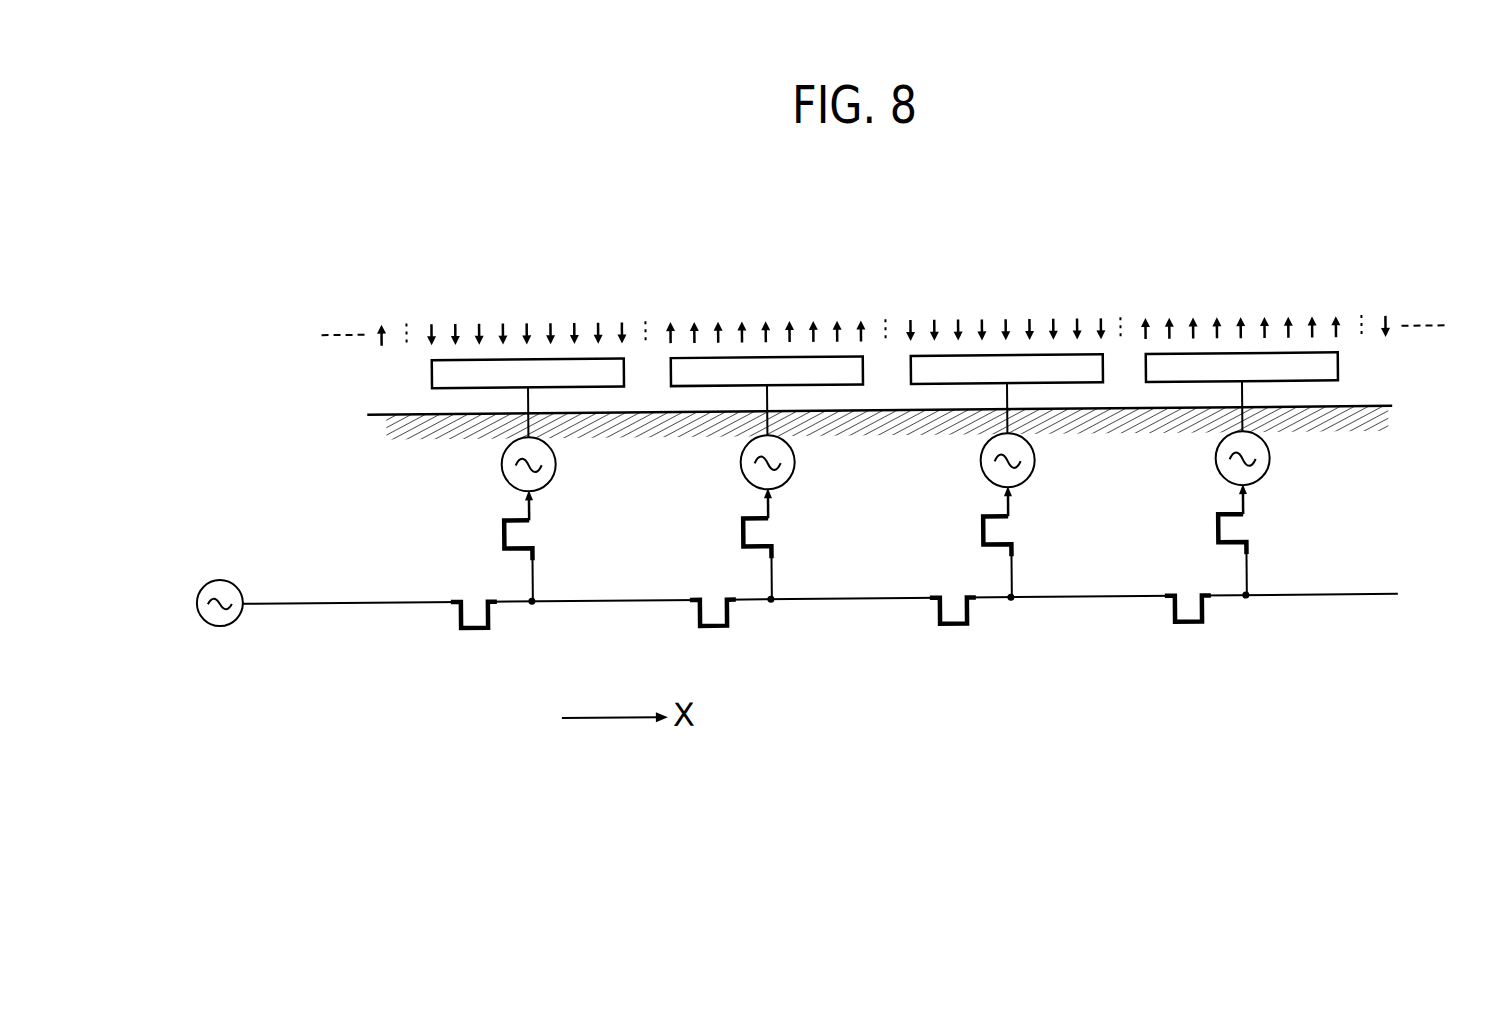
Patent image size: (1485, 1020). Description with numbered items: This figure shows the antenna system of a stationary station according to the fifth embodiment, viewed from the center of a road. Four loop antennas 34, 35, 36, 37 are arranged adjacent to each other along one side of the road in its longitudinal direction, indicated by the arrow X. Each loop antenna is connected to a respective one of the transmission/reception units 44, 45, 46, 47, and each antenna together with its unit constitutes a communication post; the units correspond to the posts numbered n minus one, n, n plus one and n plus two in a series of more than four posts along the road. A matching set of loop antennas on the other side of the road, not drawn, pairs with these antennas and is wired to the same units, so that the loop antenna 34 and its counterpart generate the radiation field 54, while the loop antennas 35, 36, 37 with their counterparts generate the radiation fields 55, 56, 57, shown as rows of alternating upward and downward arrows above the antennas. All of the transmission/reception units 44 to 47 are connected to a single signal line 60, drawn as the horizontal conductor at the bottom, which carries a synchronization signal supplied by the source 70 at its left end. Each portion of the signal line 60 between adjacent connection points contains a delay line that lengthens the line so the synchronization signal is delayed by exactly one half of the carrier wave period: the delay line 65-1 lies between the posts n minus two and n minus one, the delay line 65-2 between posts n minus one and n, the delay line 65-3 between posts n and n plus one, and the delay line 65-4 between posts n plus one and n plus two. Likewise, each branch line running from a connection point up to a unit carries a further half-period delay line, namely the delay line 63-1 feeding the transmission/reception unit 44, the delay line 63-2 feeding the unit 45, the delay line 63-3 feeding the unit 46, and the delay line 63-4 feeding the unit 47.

The loop antenna 34 is at (607, 357).
The loop antenna 35 is at (850, 357).
The loop antenna 36 is at (1082, 358).
The loop antenna 37 is at (1325, 359).
The transmission/reception unit 44 is at (549, 481).
The transmission/reception unit 45 is at (789, 482).
The transmission/reception unit 46 is at (1029, 482).
The transmission/reception unit 47 is at (1266, 482).
The radiation field 54 is at (576, 328).
The radiation field 55 is at (820, 328).
The radiation field 56 is at (1051, 330).
The radiation field 57 is at (1288, 333).
The signal line 60 is at (427, 599).
The delay line 63-1 is at (498, 519).
The delay line 63-2 is at (738, 526).
The delay line 63-3 is at (980, 528).
The delay line 63-4 is at (1215, 527).
The delay line 65-1 is at (504, 622).
The delay line 65-2 is at (743, 623).
The delay line 65-3 is at (979, 622).
The delay line 65-4 is at (1214, 621).
The signal source oscillator 70 is at (203, 582).